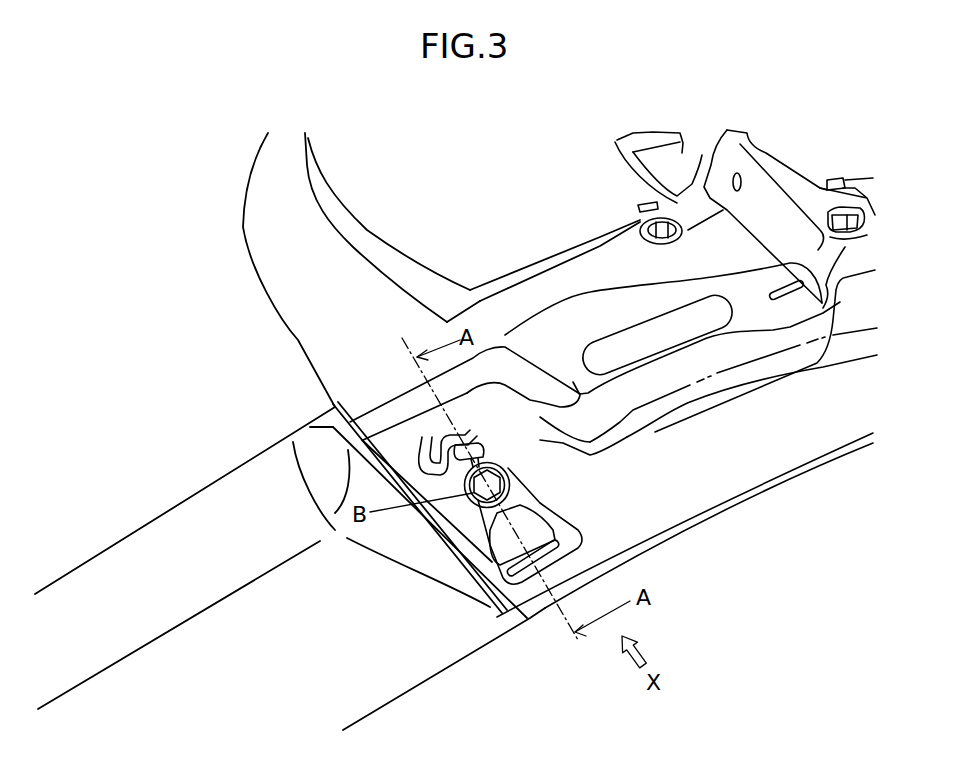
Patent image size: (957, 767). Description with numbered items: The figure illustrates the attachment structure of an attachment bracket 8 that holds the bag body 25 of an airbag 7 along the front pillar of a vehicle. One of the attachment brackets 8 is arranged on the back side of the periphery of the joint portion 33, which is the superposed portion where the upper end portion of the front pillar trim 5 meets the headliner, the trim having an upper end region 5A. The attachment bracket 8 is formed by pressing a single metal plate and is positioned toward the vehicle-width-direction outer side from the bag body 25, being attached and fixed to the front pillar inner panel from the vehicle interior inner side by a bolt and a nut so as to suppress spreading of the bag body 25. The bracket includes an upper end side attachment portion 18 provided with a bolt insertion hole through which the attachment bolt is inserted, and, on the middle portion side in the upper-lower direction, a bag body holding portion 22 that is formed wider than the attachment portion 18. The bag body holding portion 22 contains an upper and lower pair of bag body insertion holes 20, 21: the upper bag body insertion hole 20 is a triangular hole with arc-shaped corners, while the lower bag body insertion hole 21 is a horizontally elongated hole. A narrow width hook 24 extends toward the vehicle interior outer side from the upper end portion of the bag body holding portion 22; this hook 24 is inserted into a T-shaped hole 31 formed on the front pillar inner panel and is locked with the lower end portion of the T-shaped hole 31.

The front pillar trim 5 is at (224, 492).
The seat back side portion 5A is at (323, 455).
The airbag 7 is at (709, 525).
The attachment bracket 8 is at (458, 538).
The upper end side attachment portion 18 is at (505, 478).
The bag body insertion hole 20 is at (487, 548).
The bag body insertion hole 21 is at (580, 527).
The bag body holding portion 22 is at (548, 497).
The narrow width hook 24 is at (483, 447).
The bag body 25 is at (743, 450).
The T-shaped hole 31 is at (420, 408).
The joint portion 33 is at (545, 628).